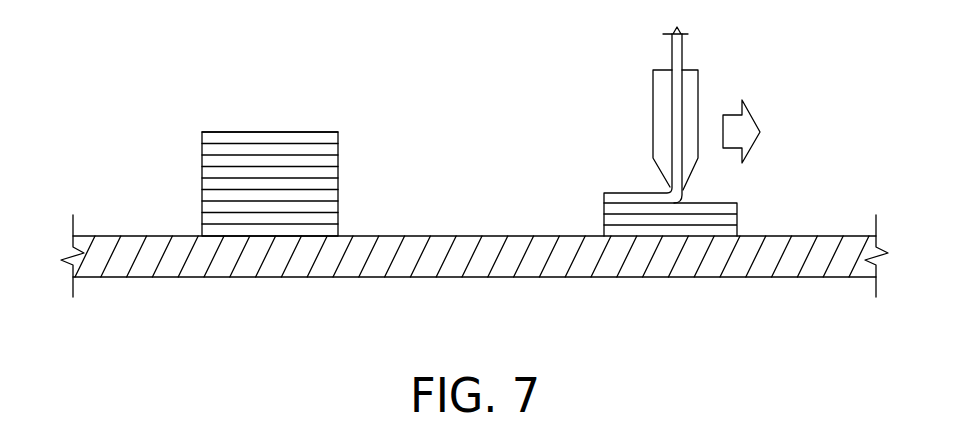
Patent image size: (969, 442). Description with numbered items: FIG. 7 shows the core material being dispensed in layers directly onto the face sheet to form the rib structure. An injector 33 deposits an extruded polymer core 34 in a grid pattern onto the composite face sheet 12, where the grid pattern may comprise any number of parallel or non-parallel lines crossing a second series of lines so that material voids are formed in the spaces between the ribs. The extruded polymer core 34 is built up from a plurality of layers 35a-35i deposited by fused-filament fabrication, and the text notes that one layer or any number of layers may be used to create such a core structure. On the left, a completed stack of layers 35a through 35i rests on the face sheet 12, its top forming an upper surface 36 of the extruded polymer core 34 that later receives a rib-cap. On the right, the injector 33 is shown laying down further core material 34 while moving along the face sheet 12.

The composite face sheet 12 is at (438, 258).
The injector 33 is at (663, 103).
The extruded polymer core 34 is at (472, 128).
The first layer of the extruded polymer core 35a is at (330, 230).
The last layer of the extruded polymer core 35i is at (330, 137).
The upper surface of the extruded polymer core 36 is at (313, 130).